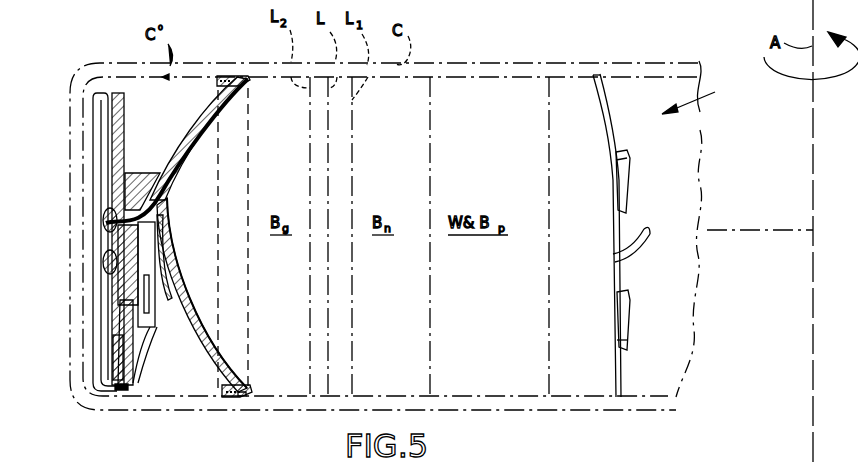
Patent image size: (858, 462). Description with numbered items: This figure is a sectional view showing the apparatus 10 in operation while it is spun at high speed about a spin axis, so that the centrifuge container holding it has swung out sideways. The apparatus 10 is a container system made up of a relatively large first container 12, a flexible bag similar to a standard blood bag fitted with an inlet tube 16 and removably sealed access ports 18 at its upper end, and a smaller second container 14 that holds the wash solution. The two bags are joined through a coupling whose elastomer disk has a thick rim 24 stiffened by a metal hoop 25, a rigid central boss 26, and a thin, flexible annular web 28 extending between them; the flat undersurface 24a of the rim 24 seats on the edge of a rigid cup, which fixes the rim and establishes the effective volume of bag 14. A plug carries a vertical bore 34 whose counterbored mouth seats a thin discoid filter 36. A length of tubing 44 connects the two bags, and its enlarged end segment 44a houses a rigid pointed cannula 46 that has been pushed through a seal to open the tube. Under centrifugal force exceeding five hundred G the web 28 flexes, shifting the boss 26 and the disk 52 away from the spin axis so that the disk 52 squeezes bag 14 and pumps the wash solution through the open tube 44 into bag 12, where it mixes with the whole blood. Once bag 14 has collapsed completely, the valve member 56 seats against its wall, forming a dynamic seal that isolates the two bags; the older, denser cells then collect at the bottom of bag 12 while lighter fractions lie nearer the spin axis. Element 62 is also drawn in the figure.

The apparatus 10 is at (718, 85).
The first container 12 is at (610, 88).
The second container 14 is at (105, 124).
The inlet tube 16 is at (636, 250).
The access ports 18 is at (628, 185).
The rim 24 is at (222, 76).
The flat undersurface 24a is at (230, 397).
The metal hoop 25 is at (241, 397).
The boss 26 is at (140, 173).
The annular web 28 is at (197, 121).
The vertical bore 34 is at (155, 253).
The filter 36 is at (167, 232).
The tubing 44 is at (135, 385).
The enlarged end segment 44a is at (196, 364).
The cannula 46 is at (150, 290).
The disk 52 is at (121, 390).
The valve member 56 is at (103, 265).
The spring 62 is at (113, 337).